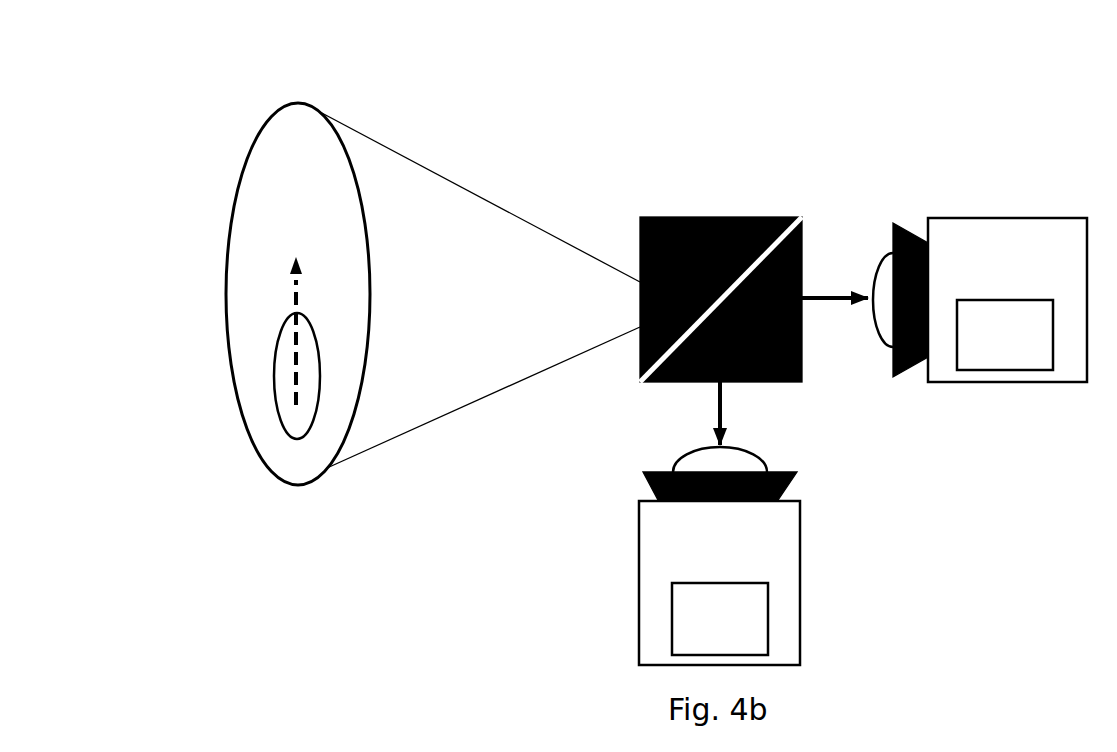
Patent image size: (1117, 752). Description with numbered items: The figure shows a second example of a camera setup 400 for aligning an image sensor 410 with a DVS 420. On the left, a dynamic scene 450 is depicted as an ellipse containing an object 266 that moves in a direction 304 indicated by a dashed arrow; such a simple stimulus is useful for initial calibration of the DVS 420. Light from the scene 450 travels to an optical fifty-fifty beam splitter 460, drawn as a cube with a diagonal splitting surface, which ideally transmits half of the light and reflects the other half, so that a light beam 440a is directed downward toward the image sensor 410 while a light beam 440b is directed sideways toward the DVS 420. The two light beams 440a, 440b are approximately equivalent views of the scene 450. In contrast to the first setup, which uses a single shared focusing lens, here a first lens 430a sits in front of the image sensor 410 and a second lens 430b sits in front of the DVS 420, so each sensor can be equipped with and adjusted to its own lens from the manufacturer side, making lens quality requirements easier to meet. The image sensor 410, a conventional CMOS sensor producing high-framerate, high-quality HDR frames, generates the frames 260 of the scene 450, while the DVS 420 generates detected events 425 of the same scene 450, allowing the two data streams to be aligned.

The camera setup 400 is at (661, 92).
The dynamic scene 450 is at (262, 461).
The object 266 is at (270, 384).
The direction 304 is at (322, 243).
The optical 50/50 beam splitter 460 is at (643, 389).
The first lens 430a is at (681, 453).
The light beam 440a is at (740, 404).
The image sensor 410 is at (746, 558).
The frames 260 is at (748, 636).
The second lens 430b is at (878, 260).
The light beam 440b is at (857, 308).
The DVS 420 is at (1033, 271).
The detected events 425 is at (1033, 351).